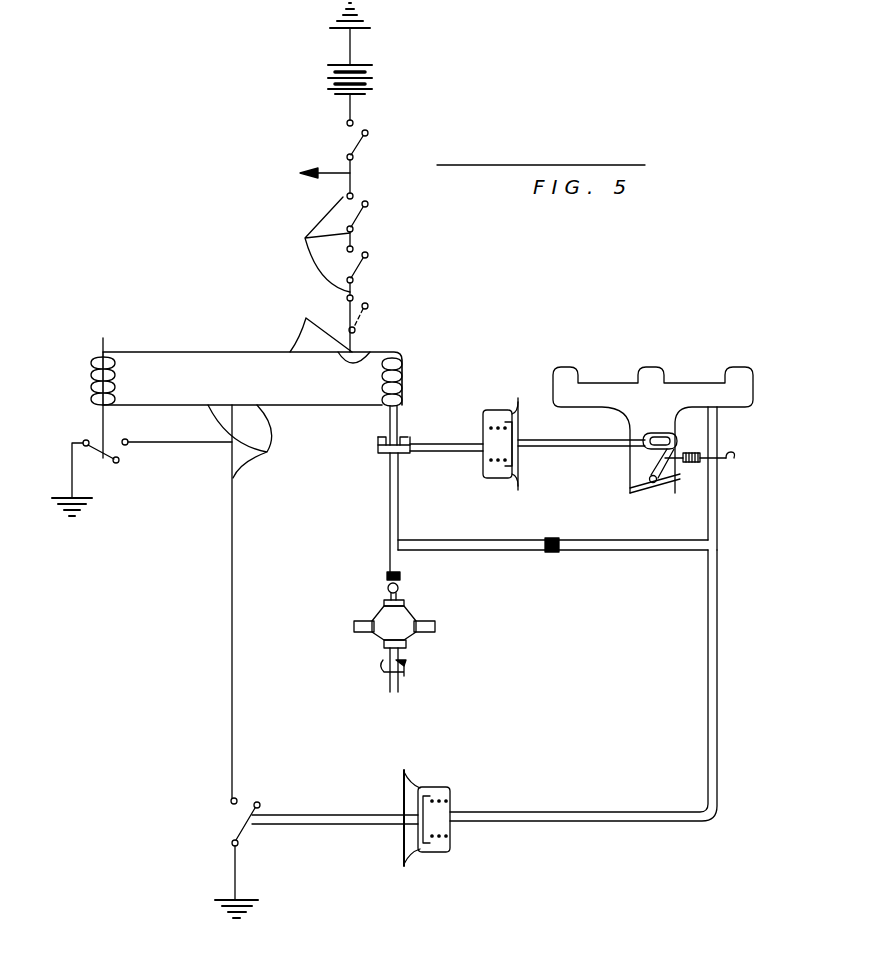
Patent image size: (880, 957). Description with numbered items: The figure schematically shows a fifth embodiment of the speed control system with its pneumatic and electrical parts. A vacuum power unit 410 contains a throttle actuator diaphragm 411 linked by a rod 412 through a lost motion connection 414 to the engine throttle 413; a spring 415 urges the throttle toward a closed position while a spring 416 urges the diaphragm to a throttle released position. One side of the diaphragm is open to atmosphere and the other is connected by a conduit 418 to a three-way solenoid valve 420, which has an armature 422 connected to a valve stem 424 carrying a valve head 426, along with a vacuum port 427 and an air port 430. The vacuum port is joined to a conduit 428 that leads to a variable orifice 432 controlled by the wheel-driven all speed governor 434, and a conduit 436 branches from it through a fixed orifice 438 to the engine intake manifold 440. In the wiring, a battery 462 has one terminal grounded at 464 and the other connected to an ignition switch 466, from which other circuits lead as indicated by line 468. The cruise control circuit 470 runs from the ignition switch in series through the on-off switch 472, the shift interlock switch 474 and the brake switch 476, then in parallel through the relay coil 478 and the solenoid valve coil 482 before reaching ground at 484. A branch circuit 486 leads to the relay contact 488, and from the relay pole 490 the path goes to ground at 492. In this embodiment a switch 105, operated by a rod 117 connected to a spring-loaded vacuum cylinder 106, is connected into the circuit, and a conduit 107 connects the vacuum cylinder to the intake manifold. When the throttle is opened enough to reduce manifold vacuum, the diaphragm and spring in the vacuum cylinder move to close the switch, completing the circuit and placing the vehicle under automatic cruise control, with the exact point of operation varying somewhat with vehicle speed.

The ground 464 is at (362, 20).
The battery 462 is at (370, 84).
The ignition switch 466 is at (370, 134).
The line 468 is at (332, 173).
The cruise control circuit 470 is at (288, 456).
The on-off switch 472 is at (370, 216).
The shift interlock switch 474 is at (370, 266).
The brake switch 476 is at (370, 322).
The relay coil 478 is at (120, 380).
The solenoid valve coil 482 is at (382, 372).
The ground 484 is at (246, 916).
The branch circuit 486 is at (158, 443).
The relay contact 488 is at (128, 440).
The relay pole 490 is at (92, 456).
The ground 492 is at (84, 514).
The vacuum power unit 410 is at (562, 424).
The throttle actuator diaphragm 411 is at (520, 436).
The rod 412 is at (548, 448).
The throttle 413 is at (636, 488).
The lost motion connection 414 is at (664, 432).
The spring 415 is at (690, 455).
The spring 416 is at (480, 478).
The conduit 418 is at (445, 451).
The three-way solenoid valve 420 is at (394, 410).
The armature 422 is at (402, 368).
The valve stem 424 is at (400, 425).
The valve head 426 is at (400, 447).
The vacuum port 427 is at (392, 456).
The conduit 428 is at (390, 522).
The air port 430 is at (405, 440).
The variable orifice 432 is at (400, 590).
The all speed governor 434 is at (372, 640).
The conduit 436 is at (719, 517).
The fixed orifice 438 is at (550, 538).
The intake manifold 440 is at (755, 392).
The switch 105 is at (240, 800).
The spring-loaded vacuum cylinder 106 is at (435, 786).
The conduit 107 is at (719, 690).
The rod 117 is at (322, 824).